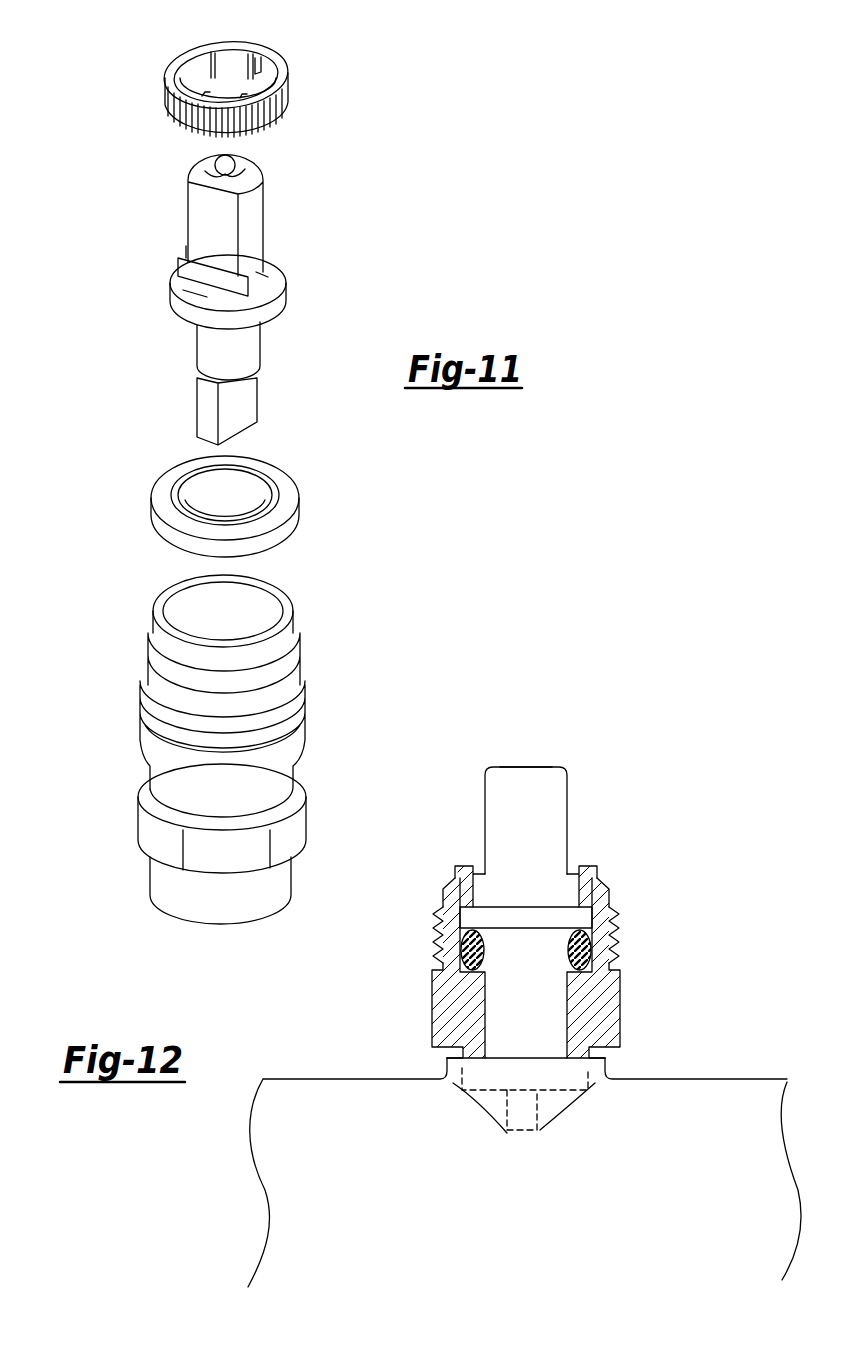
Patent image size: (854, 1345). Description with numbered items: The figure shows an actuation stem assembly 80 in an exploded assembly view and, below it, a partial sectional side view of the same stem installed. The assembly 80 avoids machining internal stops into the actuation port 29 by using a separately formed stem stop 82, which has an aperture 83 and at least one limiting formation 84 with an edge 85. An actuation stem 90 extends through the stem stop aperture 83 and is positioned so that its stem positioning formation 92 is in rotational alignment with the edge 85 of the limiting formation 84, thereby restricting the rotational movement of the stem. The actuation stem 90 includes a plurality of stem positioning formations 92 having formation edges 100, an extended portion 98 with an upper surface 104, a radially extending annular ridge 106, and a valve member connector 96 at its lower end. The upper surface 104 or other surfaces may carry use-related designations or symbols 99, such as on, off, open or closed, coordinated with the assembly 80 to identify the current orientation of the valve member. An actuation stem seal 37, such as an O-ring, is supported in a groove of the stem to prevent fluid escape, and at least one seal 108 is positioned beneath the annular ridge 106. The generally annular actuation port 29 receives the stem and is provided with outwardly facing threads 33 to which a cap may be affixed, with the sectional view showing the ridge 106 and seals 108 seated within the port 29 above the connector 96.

In FIG. 11, the actuation port 29 is at (272, 749).
In FIG. 12, the actuation port 29 is at (561, 968).
In FIG. 11, the threads 33 is at (290, 717).
In FIG. 12, the threads 33 is at (616, 931).
In FIG. 11, the actuation stem seal 37 is at (290, 524).
In FIG. 11, the actuation stem assembly 80 is at (90, 752).
In FIG. 12, the actuation stem assembly 80 is at (562, 925).
In FIG. 11, the stem stop 82 is at (256, 68).
In FIG. 12, the stem stop 82 is at (588, 867).
In FIG. 11, the aperture 83 is at (248, 90).
In FIG. 11, the limiting formation 84 is at (212, 77).
In FIG. 11, the edge 85 is at (256, 57).
In FIG. 11, the actuation stem 90 is at (231, 299).
In FIG. 12, the actuation stem 90 is at (550, 925).
In FIG. 11, the stem positioning formation 92 is at (187, 250).
In FIG. 11, the valve member connector 96 is at (212, 438).
In FIG. 12, the valve member connector 96 is at (520, 1113).
In FIG. 11, the extended portion 98 is at (248, 212).
In FIG. 12, the extended portion 98 is at (568, 793).
In FIG. 11, the designations or symbols 99 is at (213, 164).
In FIG. 11, the formation edges 100 is at (183, 263).
In FIG. 11, the upper surface 104 is at (233, 163).
In FIG. 12, the upper surface 104 is at (522, 764).
In FIG. 11, the radially extending annular ridge 106 is at (253, 313).
In FIG. 12, the radially extending annular ridge 106 is at (563, 922).
In FIG. 12, the seal 108 is at (462, 952).